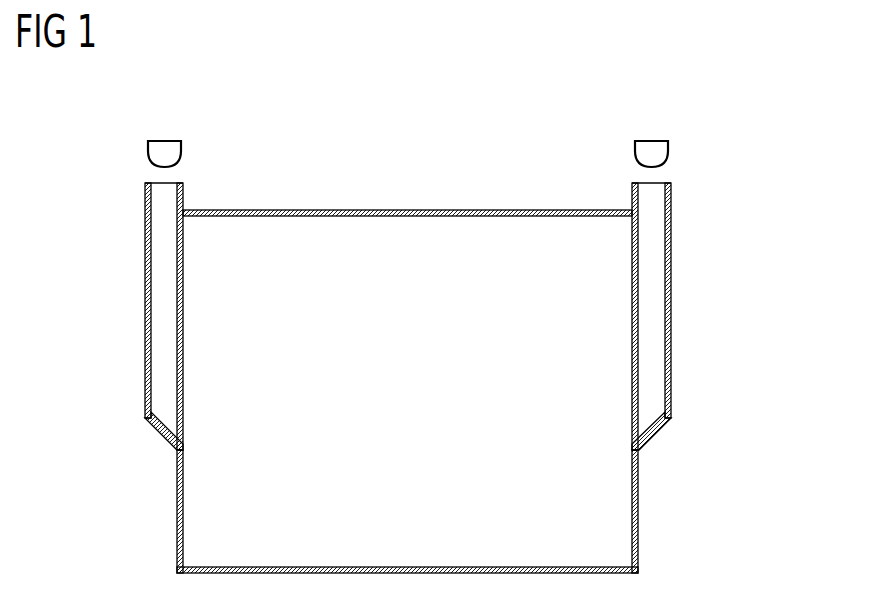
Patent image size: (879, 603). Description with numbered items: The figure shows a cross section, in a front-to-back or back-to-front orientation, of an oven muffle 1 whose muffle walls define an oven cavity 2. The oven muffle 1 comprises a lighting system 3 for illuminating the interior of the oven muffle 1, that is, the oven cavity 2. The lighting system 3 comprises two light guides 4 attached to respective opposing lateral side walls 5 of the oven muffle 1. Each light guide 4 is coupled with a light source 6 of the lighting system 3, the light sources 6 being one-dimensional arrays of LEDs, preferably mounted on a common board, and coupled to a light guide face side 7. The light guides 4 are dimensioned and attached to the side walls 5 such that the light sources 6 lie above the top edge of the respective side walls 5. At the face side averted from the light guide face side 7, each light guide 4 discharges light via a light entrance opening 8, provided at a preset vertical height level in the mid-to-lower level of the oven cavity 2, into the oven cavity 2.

The oven muffle 1 is at (525, 140).
The oven cavity 2 is at (463, 242).
The lighting system 3 is at (128, 143).
The light guide 4 is at (146, 255).
The lateral side wall 5 is at (155, 487).
The light source 6 is at (163, 152).
The light guide face side 7 is at (157, 180).
The light entrance opening 8 is at (184, 430).